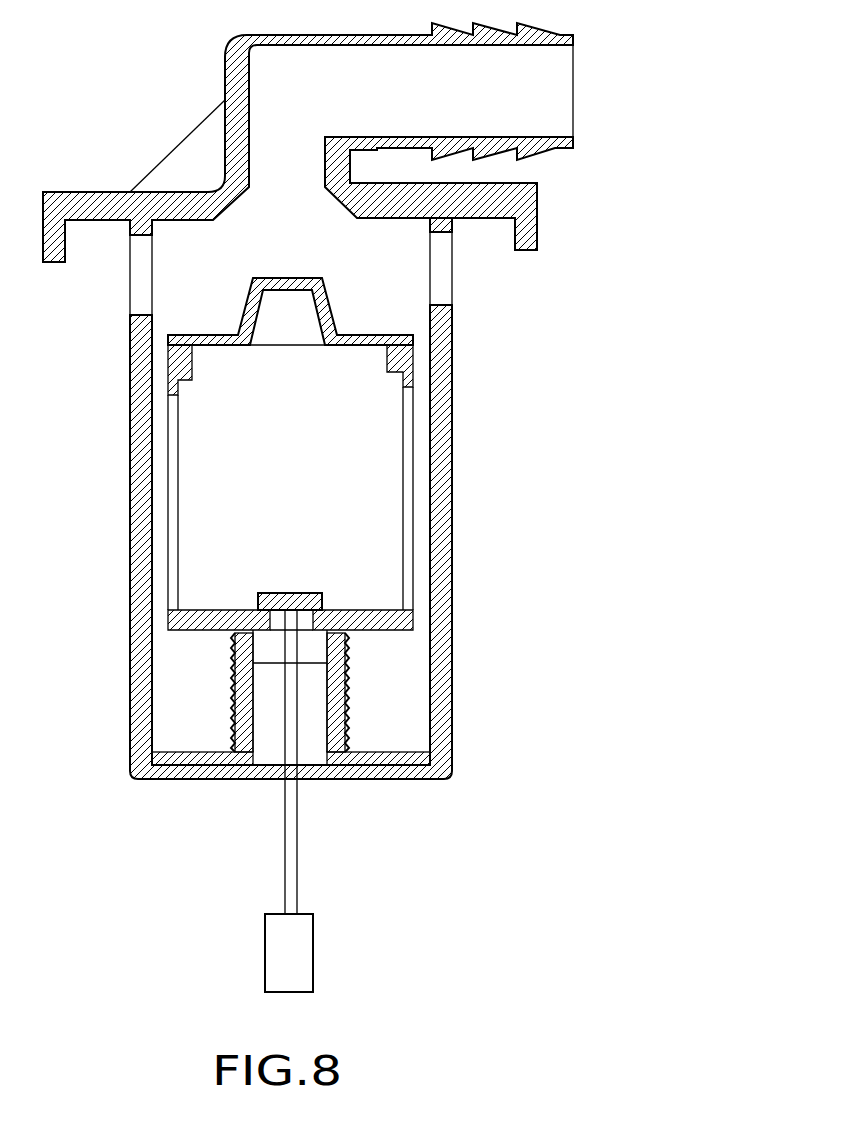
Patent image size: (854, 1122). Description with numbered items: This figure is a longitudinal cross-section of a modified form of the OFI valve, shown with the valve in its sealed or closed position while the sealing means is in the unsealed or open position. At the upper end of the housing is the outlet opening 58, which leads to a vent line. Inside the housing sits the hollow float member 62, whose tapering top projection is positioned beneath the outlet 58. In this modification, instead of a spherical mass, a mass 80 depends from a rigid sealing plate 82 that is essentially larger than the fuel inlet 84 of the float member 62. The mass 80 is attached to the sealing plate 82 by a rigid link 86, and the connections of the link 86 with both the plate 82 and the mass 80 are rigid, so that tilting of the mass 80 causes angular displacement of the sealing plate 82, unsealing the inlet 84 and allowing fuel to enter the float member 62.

The outlet opening 58 is at (263, 130).
The hollow float member 62 is at (405, 503).
The rigid sealing plate 82 is at (302, 593).
The fuel inlet 84 is at (300, 623).
The rigid link 86 is at (297, 842).
The mass 80 is at (313, 933).